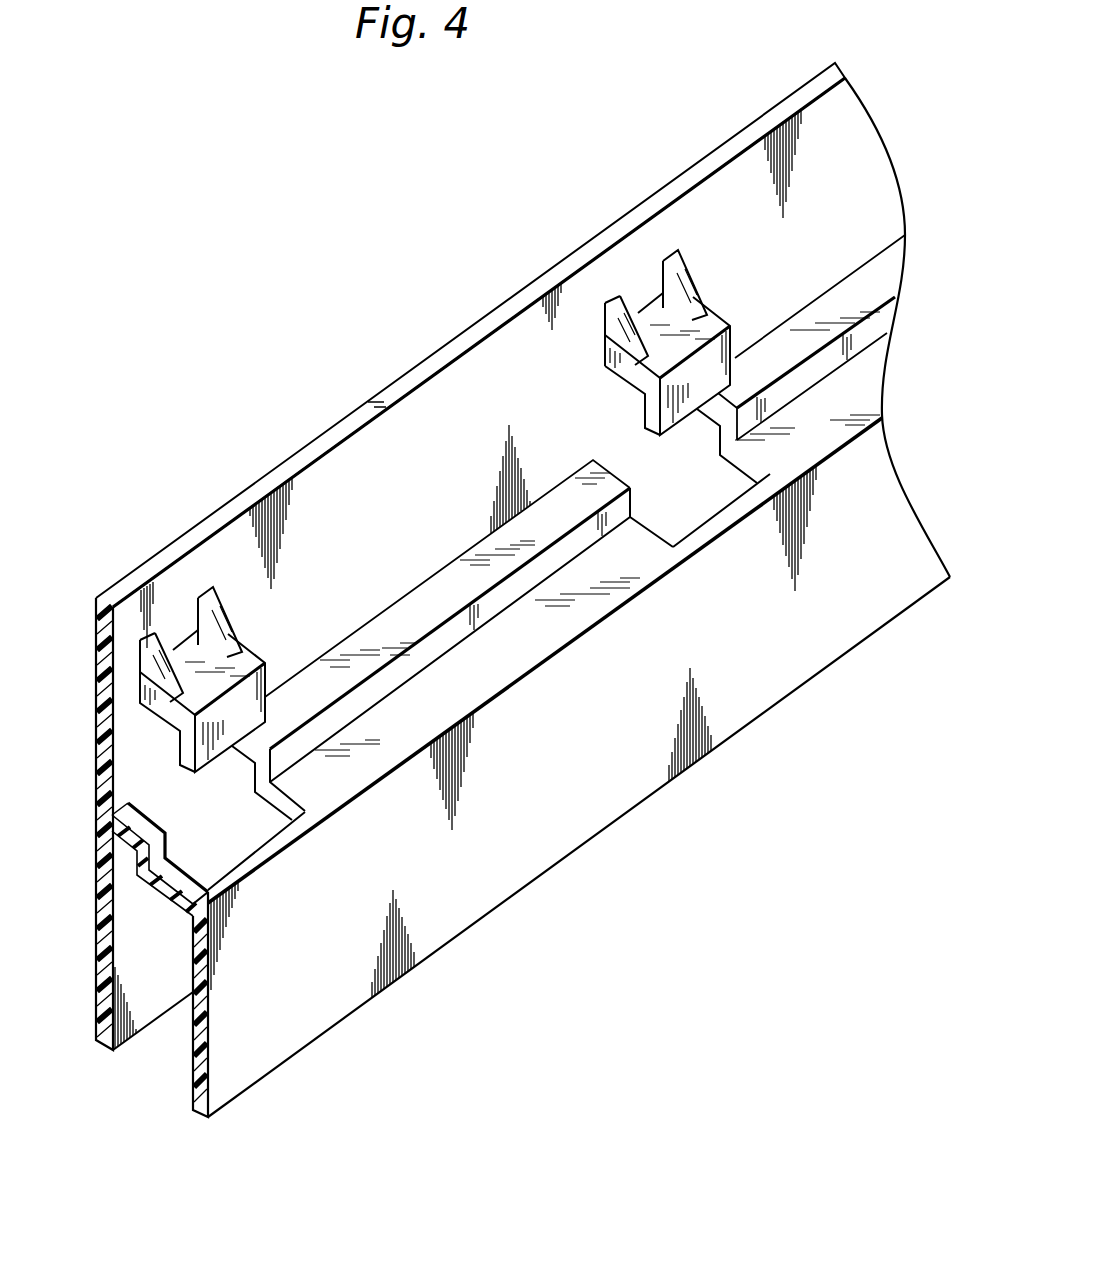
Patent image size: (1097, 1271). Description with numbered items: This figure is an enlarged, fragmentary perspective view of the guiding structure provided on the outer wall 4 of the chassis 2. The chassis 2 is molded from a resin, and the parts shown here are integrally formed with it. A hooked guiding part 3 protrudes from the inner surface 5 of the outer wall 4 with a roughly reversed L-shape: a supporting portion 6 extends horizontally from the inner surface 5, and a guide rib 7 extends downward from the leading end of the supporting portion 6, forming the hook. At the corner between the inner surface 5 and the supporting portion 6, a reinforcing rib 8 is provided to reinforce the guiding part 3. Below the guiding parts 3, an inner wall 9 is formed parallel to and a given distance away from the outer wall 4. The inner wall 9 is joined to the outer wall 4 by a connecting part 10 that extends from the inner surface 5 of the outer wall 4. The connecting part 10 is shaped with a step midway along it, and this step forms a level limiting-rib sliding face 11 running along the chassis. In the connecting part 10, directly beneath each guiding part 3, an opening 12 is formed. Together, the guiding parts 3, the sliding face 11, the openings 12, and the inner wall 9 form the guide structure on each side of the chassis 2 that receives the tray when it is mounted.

The chassis 2 is at (466, 311).
The guiding part 3 is at (458, 511).
The outer wall 4 is at (104, 690).
The inner surface 5 is at (125, 752).
The supporting portion 6 is at (651, 364).
The guide rib 7 is at (640, 430).
The reinforcing rib 8 is at (630, 307).
The inner wall 9 is at (200, 1090).
The connecting part 10 is at (145, 918).
The limiting-rib sliding face 11 is at (554, 505).
The opening 12 is at (243, 832).